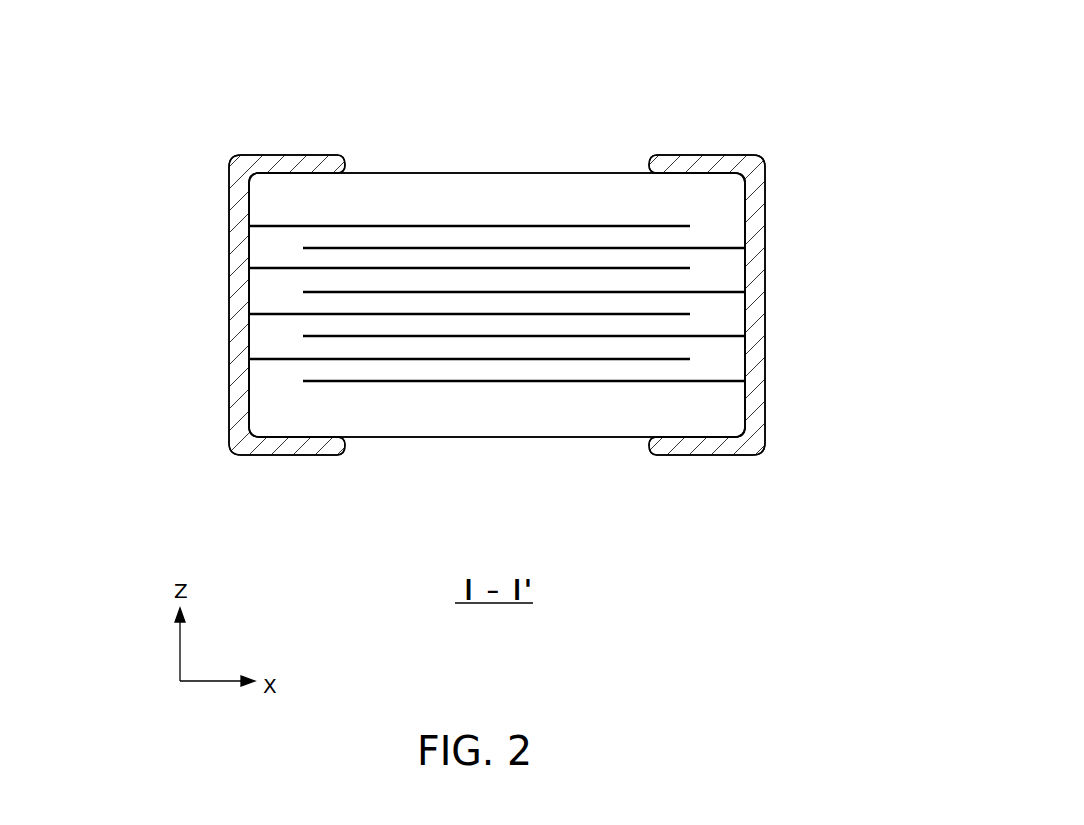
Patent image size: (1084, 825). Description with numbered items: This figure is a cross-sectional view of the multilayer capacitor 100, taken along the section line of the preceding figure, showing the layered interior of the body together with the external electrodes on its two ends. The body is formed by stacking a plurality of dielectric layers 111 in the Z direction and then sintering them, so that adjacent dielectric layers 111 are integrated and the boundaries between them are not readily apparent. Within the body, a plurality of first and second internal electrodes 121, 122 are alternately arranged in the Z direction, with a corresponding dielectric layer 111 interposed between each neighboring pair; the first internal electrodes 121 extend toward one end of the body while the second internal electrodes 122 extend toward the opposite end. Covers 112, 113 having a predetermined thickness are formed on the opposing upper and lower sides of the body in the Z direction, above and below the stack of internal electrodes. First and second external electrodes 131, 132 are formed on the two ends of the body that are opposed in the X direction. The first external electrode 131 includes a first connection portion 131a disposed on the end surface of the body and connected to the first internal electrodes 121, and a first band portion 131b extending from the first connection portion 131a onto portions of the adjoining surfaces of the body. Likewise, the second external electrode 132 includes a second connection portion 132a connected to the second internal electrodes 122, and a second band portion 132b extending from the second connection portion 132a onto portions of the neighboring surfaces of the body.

The multilayer capacitor 100 is at (522, 34).
The dielectric layer 111 is at (738, 268).
The cover 112 is at (487, 193).
The cover 113 is at (524, 420).
The first internal electrode 121 is at (412, 224).
The second internal electrode 122 is at (572, 248).
The first external electrode 131 is at (205, 326).
The first connection portion 131a is at (232, 352).
The first band portion 131b is at (272, 460).
The second external electrode 132 is at (792, 331).
The second connection portion 132a is at (757, 349).
The second band portion 132b is at (728, 480).